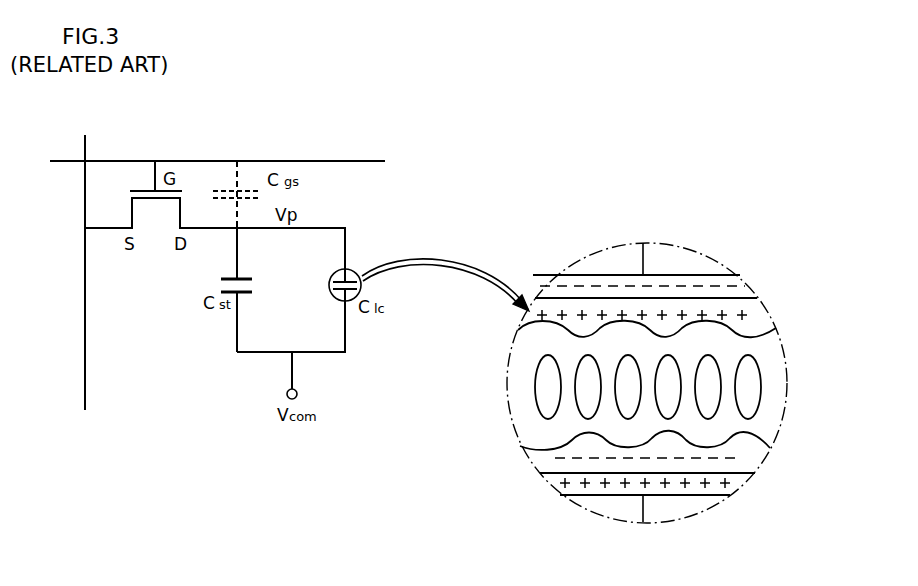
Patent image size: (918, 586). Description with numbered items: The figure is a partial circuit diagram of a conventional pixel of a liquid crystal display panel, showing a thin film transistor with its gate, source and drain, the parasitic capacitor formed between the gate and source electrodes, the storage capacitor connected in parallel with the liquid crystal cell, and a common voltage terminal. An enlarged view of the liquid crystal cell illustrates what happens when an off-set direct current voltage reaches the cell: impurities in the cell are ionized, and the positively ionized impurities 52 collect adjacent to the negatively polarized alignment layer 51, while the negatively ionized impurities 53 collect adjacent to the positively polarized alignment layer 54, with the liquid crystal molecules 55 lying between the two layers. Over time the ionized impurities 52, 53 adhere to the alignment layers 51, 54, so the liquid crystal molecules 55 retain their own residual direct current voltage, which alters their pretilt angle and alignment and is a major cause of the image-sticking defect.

The negatively polarized alignment layer 51 is at (722, 282).
The positively ionized impurities 52 is at (750, 312).
The negatively ionized impurities 53 is at (748, 462).
The positively polarized alignment layer 54 is at (735, 485).
The liquid crystal molecules 55 is at (752, 397).